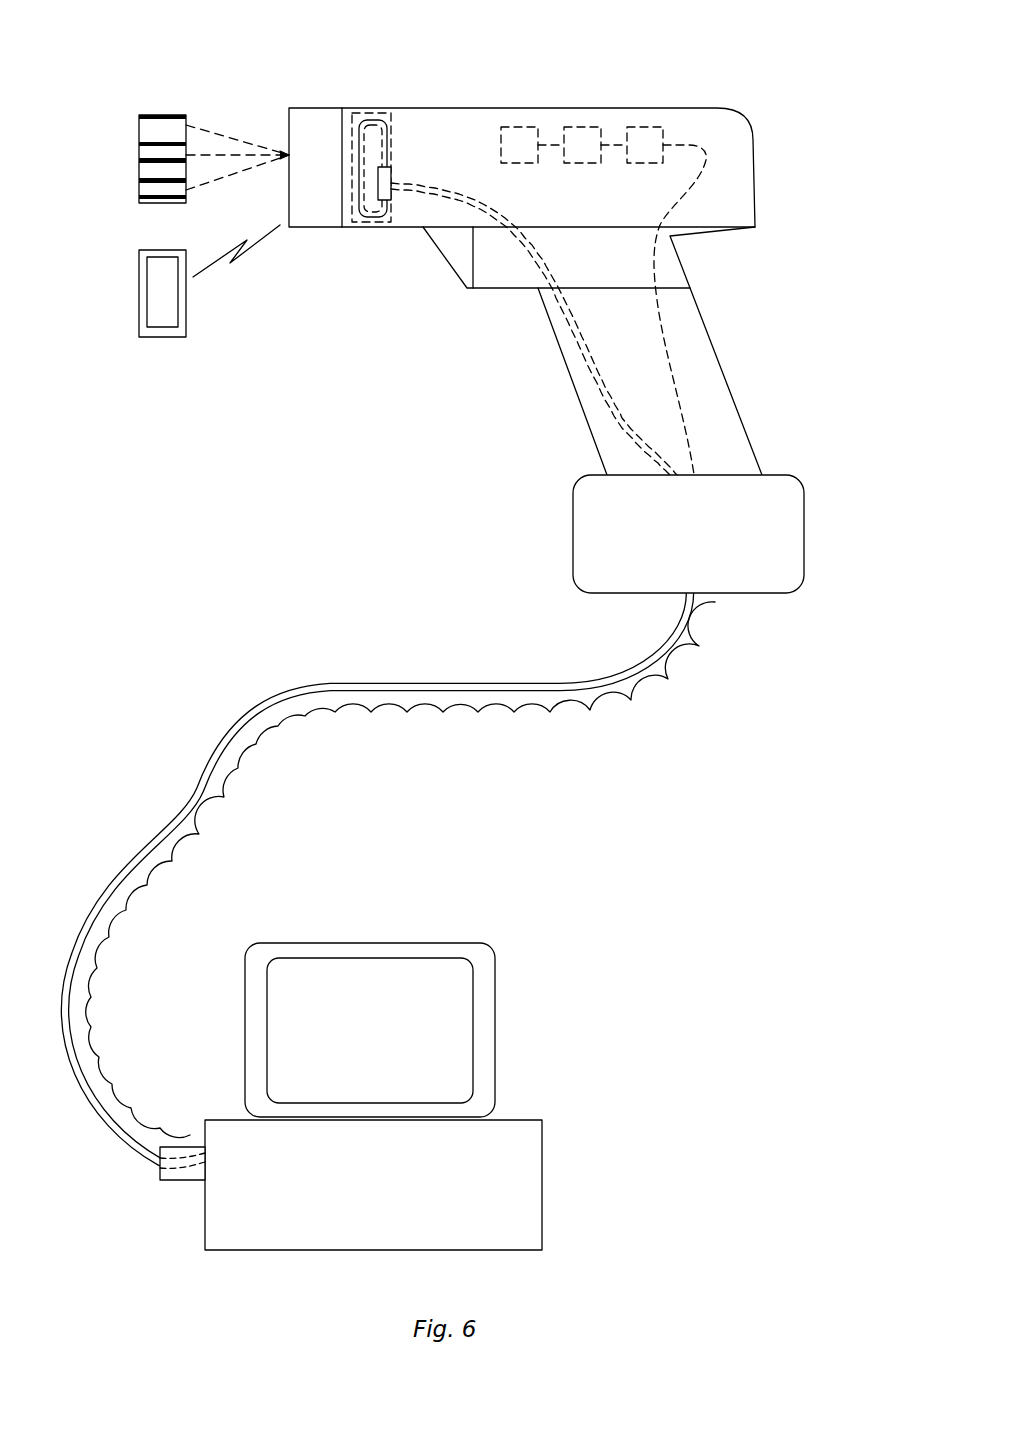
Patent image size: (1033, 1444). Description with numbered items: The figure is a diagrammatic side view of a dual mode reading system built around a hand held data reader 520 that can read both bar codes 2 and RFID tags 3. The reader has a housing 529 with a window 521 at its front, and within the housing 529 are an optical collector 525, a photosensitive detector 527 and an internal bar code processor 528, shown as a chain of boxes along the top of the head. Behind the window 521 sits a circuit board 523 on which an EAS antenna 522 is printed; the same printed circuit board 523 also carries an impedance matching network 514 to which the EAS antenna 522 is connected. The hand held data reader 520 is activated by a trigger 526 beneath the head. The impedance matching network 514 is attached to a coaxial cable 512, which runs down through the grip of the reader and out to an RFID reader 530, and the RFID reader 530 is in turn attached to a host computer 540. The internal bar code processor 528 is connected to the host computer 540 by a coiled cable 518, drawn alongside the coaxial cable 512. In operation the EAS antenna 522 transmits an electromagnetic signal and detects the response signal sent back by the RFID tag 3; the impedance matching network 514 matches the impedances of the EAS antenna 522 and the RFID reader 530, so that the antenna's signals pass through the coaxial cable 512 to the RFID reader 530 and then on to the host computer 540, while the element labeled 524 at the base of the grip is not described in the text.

The bar code 2 is at (139, 148).
The RFID tag 3 is at (139, 292).
The coaxial cable 512 is at (597, 377).
The impedance matching network 514 is at (392, 177).
The coiled cable 518 is at (437, 714).
The hand held data reader 520 is at (571, 302).
The window 521 is at (305, 108).
The EAS antenna 522 is at (387, 118).
The circuit board 523 is at (369, 113).
The base unit 524 is at (805, 500).
The optical collector 525 is at (527, 127).
The trigger 526 is at (432, 246).
The photosensitive detector 527 is at (594, 127).
The internal bar code processor 528 is at (649, 127).
The housing 529 is at (703, 108).
The RFID reader 530 is at (175, 1182).
The host computer 540 is at (543, 1156).